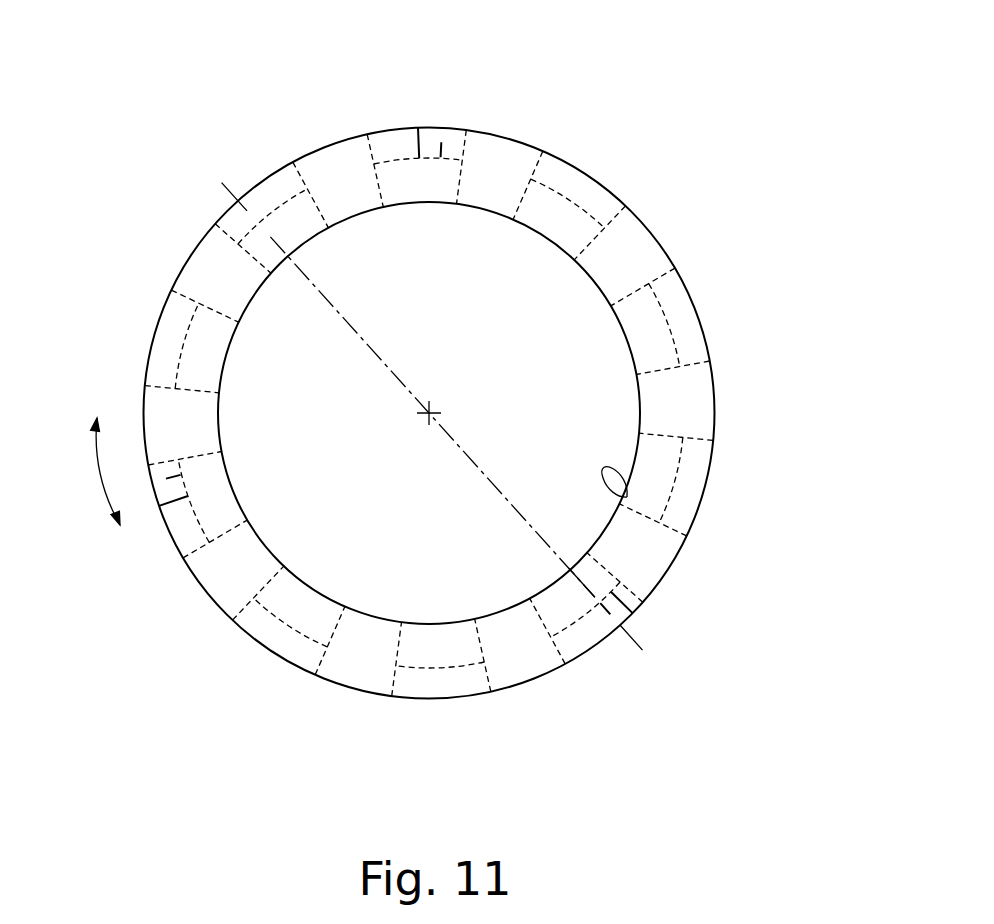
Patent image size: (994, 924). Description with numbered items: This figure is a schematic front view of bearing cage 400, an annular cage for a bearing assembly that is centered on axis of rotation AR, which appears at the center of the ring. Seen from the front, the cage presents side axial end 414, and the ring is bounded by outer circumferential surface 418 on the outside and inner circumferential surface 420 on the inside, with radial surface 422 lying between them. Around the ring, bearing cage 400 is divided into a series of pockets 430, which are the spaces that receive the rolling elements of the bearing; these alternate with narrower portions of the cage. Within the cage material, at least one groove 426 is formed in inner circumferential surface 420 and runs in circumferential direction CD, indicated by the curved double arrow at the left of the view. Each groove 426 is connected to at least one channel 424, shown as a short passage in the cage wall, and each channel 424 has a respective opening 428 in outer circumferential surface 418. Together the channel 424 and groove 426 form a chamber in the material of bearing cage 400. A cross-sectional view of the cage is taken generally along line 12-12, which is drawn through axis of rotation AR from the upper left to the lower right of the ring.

The bearing cage 400 is at (442, 369).
The side axial end 414 is at (160, 305).
The outer circumferential surface 418 is at (708, 337).
The inner circumferential surface 420 is at (627, 497).
The radial surface 422 is at (672, 300).
The channel 424 is at (443, 141).
The groove 426 is at (549, 210).
The opening 428 is at (429, 127).
The pocket 430 is at (238, 288).
The line 12- 12 is at (674, 622).
The axis of rotation AR is at (447, 403).
The circumferential direction CD is at (98, 470).